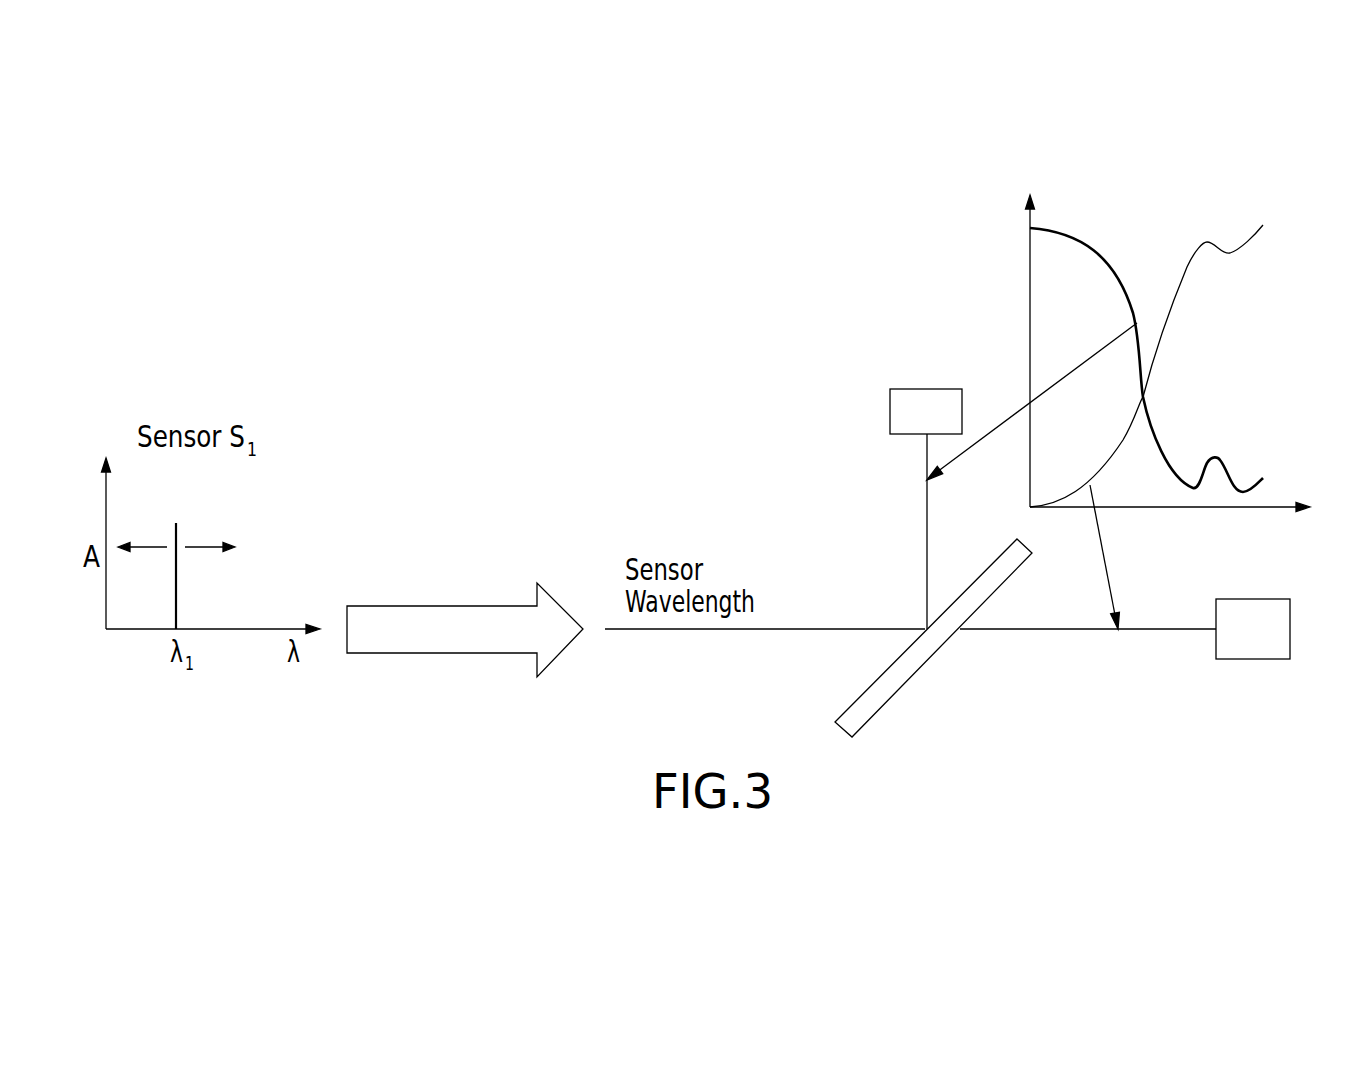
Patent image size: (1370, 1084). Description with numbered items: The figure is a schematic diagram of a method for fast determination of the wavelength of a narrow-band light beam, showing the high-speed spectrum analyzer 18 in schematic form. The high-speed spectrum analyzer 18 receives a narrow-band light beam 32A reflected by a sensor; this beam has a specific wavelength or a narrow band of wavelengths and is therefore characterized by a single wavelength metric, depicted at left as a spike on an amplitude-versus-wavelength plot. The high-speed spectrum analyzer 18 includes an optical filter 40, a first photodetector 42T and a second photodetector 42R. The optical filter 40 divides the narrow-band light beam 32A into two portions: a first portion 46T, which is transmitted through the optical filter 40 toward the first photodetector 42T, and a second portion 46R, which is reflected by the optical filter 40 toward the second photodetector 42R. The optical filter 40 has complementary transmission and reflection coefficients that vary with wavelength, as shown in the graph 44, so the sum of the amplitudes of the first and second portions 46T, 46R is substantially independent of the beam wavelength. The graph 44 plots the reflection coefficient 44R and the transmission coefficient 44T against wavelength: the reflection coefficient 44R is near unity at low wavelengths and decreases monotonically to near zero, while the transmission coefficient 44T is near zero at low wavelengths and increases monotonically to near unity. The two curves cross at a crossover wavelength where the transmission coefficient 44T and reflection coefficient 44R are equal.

The high-speed spectrum analyzer 18 is at (856, 270).
The narrow-band light beam 32A is at (226, 578).
The optical filter 40 is at (905, 706).
The second photodetector 42R is at (900, 412).
The first photodetector 42T is at (1253, 659).
The graph 44 is at (1284, 348).
The transmission coefficient 44T is at (1175, 303).
The reflection coefficient 44R is at (1220, 460).
The second portion 46R is at (910, 517).
The first portion 46T is at (1072, 654).